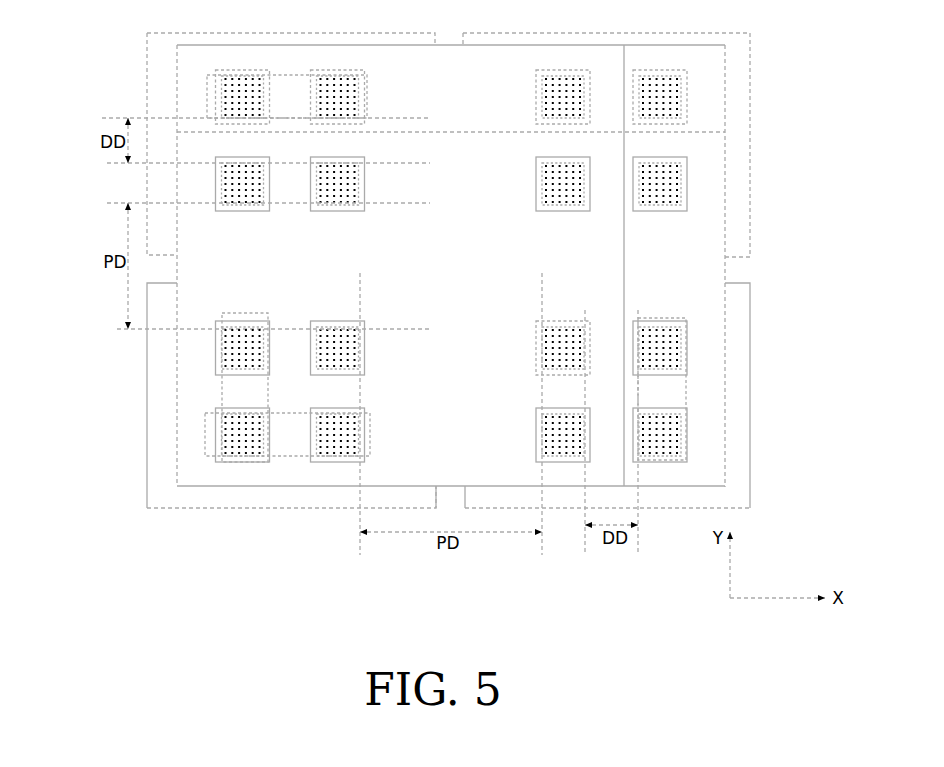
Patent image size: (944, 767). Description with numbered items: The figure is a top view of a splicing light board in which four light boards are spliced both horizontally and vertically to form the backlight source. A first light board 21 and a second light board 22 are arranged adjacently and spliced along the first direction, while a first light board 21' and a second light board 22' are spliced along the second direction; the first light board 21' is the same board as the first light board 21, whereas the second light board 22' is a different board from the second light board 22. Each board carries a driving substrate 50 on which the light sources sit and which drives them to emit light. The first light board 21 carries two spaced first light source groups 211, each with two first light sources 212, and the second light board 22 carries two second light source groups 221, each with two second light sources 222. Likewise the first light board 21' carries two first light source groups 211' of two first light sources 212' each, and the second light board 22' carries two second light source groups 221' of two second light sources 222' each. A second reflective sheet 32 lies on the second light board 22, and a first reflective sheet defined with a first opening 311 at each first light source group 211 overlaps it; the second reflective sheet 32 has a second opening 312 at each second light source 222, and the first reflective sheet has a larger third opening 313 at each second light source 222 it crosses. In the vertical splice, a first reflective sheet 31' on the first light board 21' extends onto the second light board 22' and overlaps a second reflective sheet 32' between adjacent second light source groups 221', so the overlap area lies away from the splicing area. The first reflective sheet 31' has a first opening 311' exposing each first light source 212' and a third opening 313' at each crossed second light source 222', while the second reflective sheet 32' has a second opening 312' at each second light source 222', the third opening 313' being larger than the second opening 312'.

The driving substrate 50 is at (170, 60).
The second reflective sheet 32' is at (291, 35).
The second light board 22' is at (110, 144).
The second light source group 221' is at (228, 96).
The second light source 222' is at (177, 91).
The second opening 312' is at (280, 42).
The third opening 313' is at (163, 184).
The first opening 311' is at (158, 343).
The first light source 212' is at (176, 387).
The first light board 21' is at (107, 395).
The first light source group 211' is at (225, 436).
The first reflective sheet 31' is at (270, 492).
The first light source group 211 is at (232, 477).
The first light source 212 is at (331, 477).
The first light board 21 is at (262, 563).
The first opening 311 is at (364, 522).
The third opening 313 is at (567, 512).
The second opening 312 is at (678, 511).
The second light source group 221 is at (722, 373).
The second light board 22 is at (740, 360).
The second light source 222 is at (720, 435).
The second reflective sheet 32 is at (634, 395).